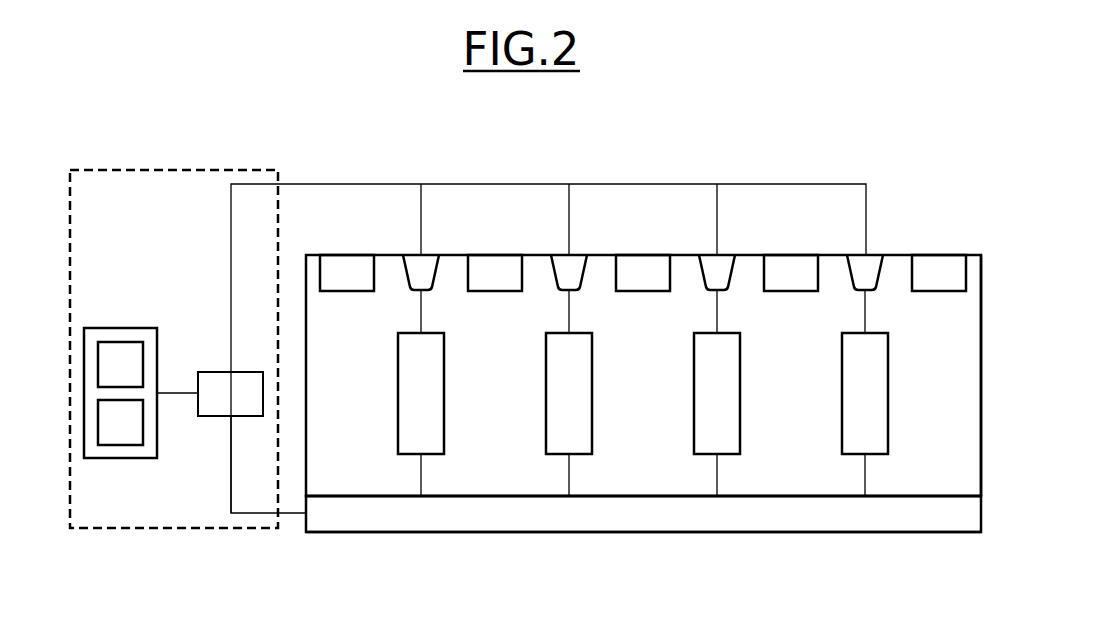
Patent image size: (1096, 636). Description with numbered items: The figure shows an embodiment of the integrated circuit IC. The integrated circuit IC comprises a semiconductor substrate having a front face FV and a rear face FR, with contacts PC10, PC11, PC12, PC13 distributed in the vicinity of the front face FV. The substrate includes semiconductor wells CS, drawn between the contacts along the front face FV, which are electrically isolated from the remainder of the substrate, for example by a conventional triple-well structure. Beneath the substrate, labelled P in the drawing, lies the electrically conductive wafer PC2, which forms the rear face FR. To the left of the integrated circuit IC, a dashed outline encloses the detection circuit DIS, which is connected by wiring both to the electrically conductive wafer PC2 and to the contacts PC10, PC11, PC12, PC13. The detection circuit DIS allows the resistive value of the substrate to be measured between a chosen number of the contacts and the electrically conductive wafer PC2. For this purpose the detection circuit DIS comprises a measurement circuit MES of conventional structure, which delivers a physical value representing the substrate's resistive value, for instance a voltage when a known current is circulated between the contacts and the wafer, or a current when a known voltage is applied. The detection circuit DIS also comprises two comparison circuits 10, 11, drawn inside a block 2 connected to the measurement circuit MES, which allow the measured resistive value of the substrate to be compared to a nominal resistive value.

The detection circuit DIS is at (174, 170).
The processing unit 2 is at (120, 327).
The comparison circuit 10 is at (120, 364).
The comparison circuit 11 is at (120, 422).
The measurement circuit MES is at (230, 394).
The integrated circuit IC is at (897, 187).
The semiconductor wells CS is at (643, 273).
The contact PC10 is at (425, 270).
The contact PC11 is at (573, 270).
The contact PC12 is at (722, 270).
The contact PC13 is at (870, 270).
The front face FV is at (972, 255).
The substrate P is at (643, 480).
The electrically conductive wafer PC2 is at (635, 512).
The rear face FR is at (934, 533).